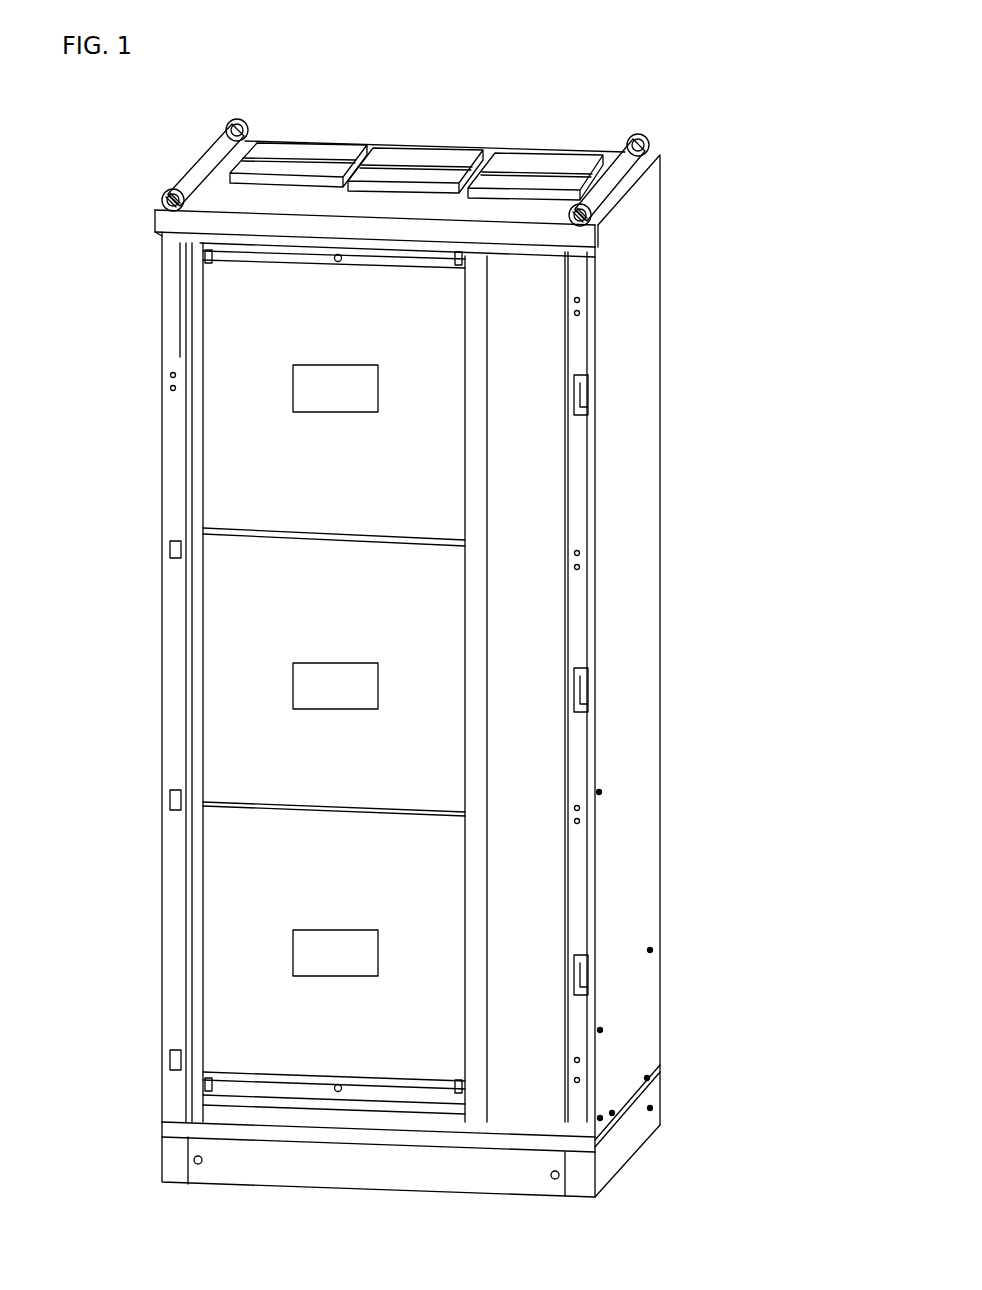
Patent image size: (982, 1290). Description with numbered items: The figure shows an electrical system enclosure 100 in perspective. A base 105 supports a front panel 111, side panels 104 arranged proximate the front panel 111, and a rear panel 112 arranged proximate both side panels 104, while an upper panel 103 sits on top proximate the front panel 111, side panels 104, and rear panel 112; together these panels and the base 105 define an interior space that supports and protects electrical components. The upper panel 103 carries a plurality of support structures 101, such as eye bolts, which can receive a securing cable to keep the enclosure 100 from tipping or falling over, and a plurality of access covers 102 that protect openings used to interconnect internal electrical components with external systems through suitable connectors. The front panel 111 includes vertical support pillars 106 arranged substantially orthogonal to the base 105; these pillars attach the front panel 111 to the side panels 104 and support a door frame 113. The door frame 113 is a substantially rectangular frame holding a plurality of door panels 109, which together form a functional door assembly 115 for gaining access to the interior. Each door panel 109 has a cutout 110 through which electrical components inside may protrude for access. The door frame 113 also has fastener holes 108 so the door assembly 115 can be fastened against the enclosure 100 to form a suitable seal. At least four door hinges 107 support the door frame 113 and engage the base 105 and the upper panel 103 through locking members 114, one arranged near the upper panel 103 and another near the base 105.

The electrical system enclosure 100 is at (668, 188).
The support structures 101 is at (164, 196).
The access covers 102 is at (428, 150).
The upper panel 103 is at (610, 170).
The side panels 104 is at (643, 246).
The base 105 is at (618, 1143).
The vertical support pillars 106 is at (175, 930).
The door hinges 107 is at (206, 258).
The fastener holes 108 is at (338, 262).
The door panels 109 is at (352, 478).
The cutout 110 is at (356, 402).
The front panel 111 is at (535, 492).
The rear panel 112 is at (678, 504).
The door frame 113 is at (383, 1090).
The locking members 114 is at (365, 253).
The functional door assembly 115 is at (243, 585).